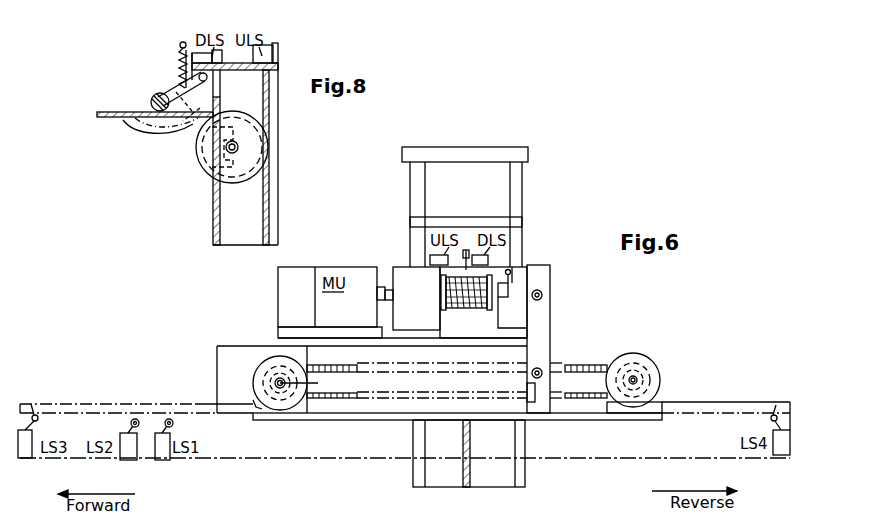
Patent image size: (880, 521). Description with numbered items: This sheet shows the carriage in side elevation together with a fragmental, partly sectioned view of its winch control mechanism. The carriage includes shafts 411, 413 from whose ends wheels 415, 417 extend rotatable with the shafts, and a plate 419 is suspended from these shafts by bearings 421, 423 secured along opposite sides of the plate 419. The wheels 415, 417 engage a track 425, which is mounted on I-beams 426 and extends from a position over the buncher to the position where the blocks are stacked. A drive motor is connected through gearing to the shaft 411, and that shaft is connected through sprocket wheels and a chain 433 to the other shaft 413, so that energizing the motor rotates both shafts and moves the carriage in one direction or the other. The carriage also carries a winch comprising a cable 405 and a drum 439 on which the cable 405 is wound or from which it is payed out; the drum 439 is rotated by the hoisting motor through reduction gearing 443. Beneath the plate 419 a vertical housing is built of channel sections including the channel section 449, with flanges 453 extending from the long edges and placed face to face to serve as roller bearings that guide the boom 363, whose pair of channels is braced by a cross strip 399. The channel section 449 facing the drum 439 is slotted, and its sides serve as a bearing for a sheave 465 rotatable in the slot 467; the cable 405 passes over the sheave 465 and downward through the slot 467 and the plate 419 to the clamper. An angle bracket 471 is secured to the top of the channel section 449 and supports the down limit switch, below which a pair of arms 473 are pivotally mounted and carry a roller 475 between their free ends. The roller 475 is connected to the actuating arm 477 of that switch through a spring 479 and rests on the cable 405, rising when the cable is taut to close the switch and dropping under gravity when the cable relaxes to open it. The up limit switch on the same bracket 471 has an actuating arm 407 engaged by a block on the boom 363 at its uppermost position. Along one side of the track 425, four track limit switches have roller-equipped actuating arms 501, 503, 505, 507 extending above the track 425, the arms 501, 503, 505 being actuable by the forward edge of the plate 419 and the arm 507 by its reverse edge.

In FIG. 6, the boom 363 is at (489, 191).
In FIG. 6, the cross strip 399 is at (486, 150).
In FIG. 8, the cable 405 is at (115, 112).
In FIG. 6, the cable 405 is at (471, 467).
In FIG. 8, the actuating arm 407 is at (277, 46).
In FIG. 6, the shaft 411 is at (314, 384).
In FIG. 6, the shaft 413 is at (636, 378).
In FIG. 6, the wheel 415 is at (266, 369).
In FIG. 6, the wheel 417 is at (648, 347).
In FIG. 6, the plate 419 is at (388, 421).
In FIG. 6, the bearing 421 is at (254, 403).
In FIG. 6, the bearing 423 is at (663, 405).
In FIG. 6, the track 425 is at (706, 405).
In FIG. 6, the I-beam 426 is at (370, 459).
In FIG. 6, the chain 433 is at (355, 368).
In FIG. 6, the drum 439 is at (447, 310).
In FIG. 6, the reduction gearing 443 is at (431, 296).
In FIG. 8, the channel section 449 is at (213, 207).
In FIG. 6, the flange 453 is at (543, 323).
In FIG. 8, the sheave 465 is at (263, 139).
In FIG. 8, the slot 467 is at (215, 179).
In FIG. 8, the angle bracket 471 is at (279, 64).
In FIG. 8, the arm 473 is at (172, 92).
In FIG. 8, the roller 475 is at (153, 96).
In FIG. 8, the actuating arm 477 is at (184, 42).
In FIG. 8, the spring 479 is at (180, 56).
In FIG. 6, the actuating arm 501 is at (155, 416).
In FIG. 6, the actuating arm 503 is at (118, 420).
In FIG. 6, the actuating arm 505 is at (34, 414).
In FIG. 6, the actuating arm 507 is at (775, 410).